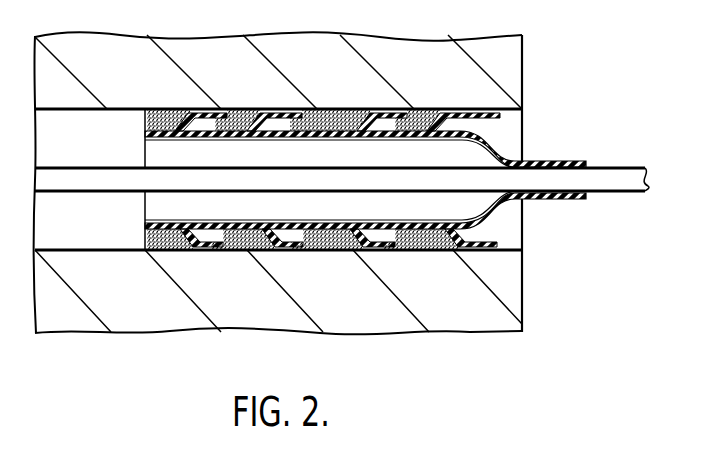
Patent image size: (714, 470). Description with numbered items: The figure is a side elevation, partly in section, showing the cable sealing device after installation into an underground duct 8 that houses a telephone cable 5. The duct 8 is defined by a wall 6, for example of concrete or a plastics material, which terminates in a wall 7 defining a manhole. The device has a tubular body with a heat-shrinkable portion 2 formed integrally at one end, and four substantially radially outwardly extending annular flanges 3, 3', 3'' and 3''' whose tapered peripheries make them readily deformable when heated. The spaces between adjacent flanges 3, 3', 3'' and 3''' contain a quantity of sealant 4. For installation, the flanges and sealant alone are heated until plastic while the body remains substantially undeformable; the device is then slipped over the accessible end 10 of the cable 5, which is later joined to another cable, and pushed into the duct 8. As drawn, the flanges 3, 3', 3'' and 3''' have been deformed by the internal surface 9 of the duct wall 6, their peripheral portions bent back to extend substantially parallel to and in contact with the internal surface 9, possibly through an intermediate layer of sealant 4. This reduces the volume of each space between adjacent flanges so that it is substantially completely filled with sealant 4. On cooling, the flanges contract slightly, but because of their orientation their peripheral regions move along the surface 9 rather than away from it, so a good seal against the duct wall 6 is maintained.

The heat-shrinkable portion 2 is at (547, 161).
The annular flange 3 is at (185, 261).
The annular flange 3' is at (263, 262).
The annular flange 3'' is at (356, 262).
The annular flange 3''' is at (451, 261).
The sealant 4 is at (240, 109).
The telephone cable 5 is at (617, 168).
The duct wall 6 is at (263, 313).
The manhole wall 7 is at (523, 78).
The duct 8 is at (506, 247).
The internal surface of the duct wall 9 is at (128, 109).
The accessible end of the cable 10 is at (647, 188).